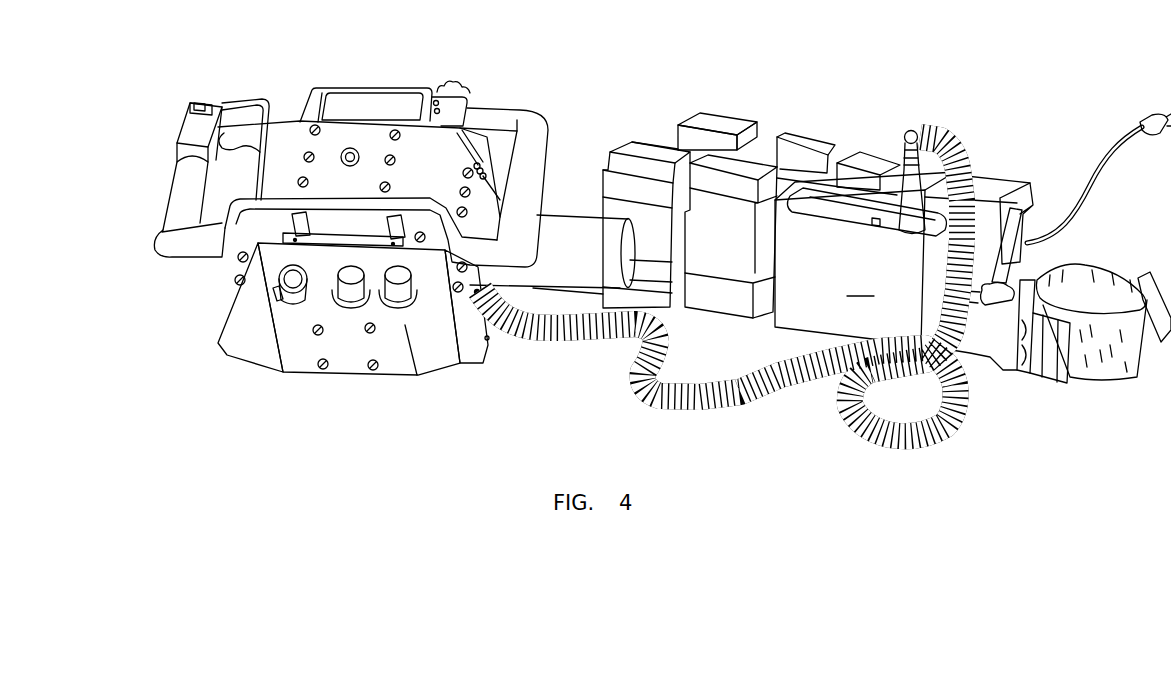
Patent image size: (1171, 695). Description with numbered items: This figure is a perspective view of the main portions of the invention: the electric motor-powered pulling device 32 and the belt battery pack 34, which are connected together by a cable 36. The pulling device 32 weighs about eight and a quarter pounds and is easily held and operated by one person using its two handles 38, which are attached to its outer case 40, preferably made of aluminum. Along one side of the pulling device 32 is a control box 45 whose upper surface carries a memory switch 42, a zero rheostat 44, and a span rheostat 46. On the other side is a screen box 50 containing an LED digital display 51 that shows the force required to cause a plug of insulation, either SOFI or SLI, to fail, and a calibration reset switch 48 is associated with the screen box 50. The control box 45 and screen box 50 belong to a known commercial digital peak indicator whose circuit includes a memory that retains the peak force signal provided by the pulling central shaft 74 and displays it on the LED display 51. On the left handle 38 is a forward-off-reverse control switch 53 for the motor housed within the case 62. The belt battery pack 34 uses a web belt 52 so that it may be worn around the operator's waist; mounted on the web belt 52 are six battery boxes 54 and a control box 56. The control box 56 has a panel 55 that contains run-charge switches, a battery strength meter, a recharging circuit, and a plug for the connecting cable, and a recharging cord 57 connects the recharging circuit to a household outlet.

The electric motor-powered pulling device 32 is at (258, 80).
The belt battery pack 34 is at (941, 125).
The cable 36 is at (742, 408).
The handles 38 is at (170, 187).
The outer case 40 is at (237, 275).
The memory switch 42 is at (275, 287).
The zero rheostat 44 is at (363, 300).
The control box 45 is at (330, 310).
The span rheostat 46 is at (410, 300).
The calibration reset switch 48 is at (435, 99).
The screen box 50 is at (340, 87).
The LED digital display 51 is at (376, 99).
The web belt 52 is at (1107, 267).
The forward-off-reverse control switch 53 is at (200, 101).
The battery boxes 54 is at (620, 148).
The panel 55 is at (835, 210).
The control box 56 is at (904, 271).
The recharging cord 57 is at (1098, 170).
The case 62 is at (562, 219).
The pulling central shaft 74 is at (347, 166).